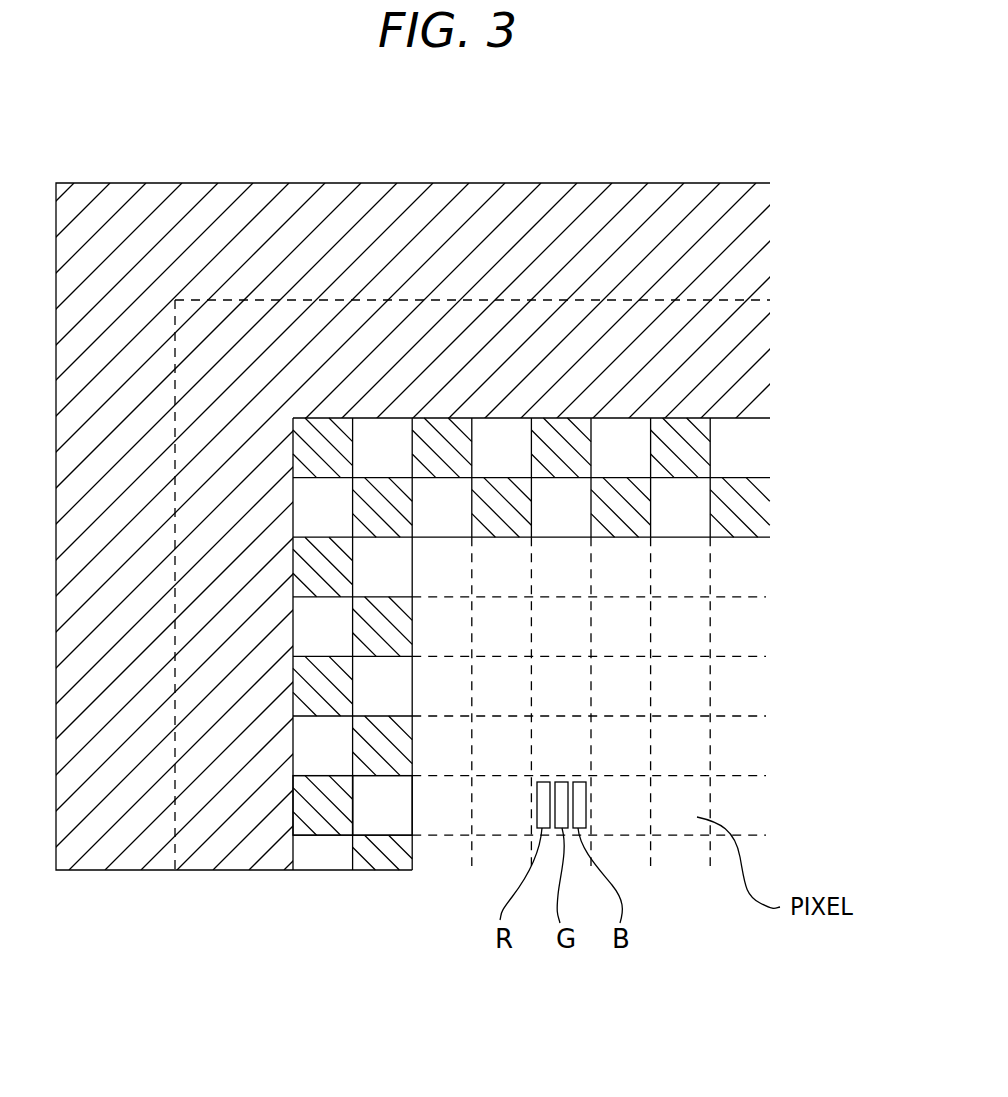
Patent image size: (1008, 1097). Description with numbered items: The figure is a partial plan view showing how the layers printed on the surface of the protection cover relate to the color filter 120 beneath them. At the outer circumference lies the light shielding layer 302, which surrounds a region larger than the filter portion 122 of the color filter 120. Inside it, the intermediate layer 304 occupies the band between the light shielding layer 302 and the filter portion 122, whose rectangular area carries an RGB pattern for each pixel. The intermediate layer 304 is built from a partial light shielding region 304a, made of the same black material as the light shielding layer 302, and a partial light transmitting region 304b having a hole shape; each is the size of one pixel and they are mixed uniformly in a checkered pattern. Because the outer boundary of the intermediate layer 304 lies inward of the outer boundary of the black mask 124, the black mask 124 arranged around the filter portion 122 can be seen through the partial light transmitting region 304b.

The color filter 120 is at (687, 870).
The filter portion 122 is at (781, 537).
The black mask 124 is at (781, 302).
The light shielding layer 302 is at (56, 880).
The intermediate layer 304 is at (293, 880).
The partial light shielding region 304a is at (323, 828).
The partial light transmitting region 304b is at (395, 817).